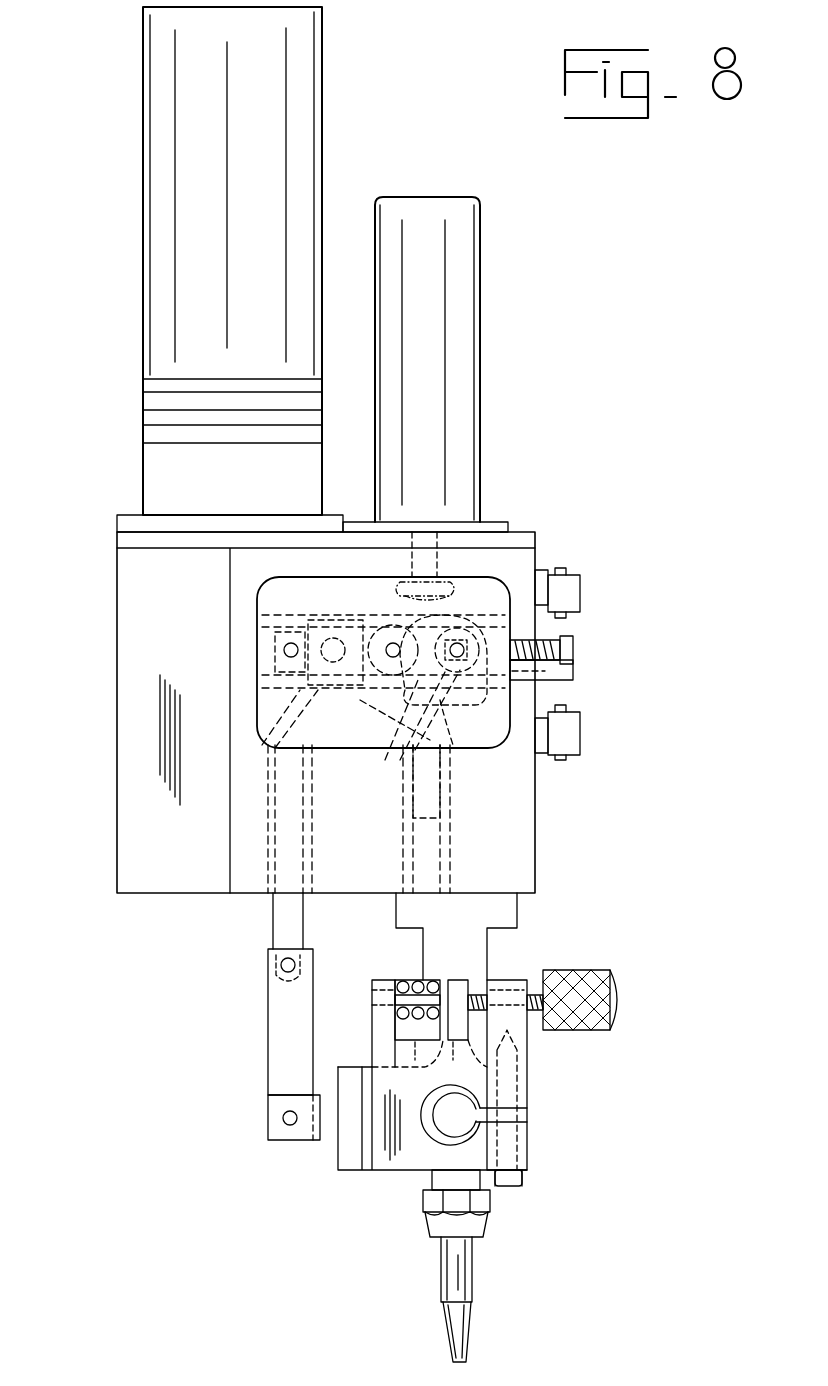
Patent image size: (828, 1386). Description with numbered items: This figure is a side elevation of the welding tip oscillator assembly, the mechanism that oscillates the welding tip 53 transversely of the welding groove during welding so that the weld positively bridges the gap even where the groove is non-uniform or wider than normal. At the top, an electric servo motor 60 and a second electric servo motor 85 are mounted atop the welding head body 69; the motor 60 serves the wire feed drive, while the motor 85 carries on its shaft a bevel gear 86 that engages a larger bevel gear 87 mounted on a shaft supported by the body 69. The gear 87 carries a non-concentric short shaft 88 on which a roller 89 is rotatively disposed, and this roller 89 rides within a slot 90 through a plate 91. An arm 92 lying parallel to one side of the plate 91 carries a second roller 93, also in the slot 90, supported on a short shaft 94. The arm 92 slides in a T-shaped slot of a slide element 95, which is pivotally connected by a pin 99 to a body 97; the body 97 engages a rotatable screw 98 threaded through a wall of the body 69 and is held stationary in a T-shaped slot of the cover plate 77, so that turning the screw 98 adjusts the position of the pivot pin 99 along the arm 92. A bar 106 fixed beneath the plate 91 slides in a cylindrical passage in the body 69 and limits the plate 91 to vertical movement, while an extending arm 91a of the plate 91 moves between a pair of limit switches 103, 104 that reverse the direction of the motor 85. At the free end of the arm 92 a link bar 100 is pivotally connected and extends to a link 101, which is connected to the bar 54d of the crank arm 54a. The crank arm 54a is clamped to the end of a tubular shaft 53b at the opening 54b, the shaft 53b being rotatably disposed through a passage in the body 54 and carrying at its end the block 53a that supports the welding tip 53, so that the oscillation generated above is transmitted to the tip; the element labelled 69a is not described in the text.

The welding tip 53 is at (472, 1268).
The block 53a is at (540, 1099).
The tubular shaft 53b is at (482, 1115).
The body 54 is at (487, 956).
The crank arm 54a is at (365, 1175).
The opening 54b is at (486, 1126).
The bar 54d is at (290, 1140).
The electric servo motor 60 is at (143, 232).
The welding head body 69 is at (535, 812).
The housing boss 69a is at (573, 666).
The cover plate 77 is at (257, 605).
The electric servo motor 85 is at (480, 360).
The bevel gear 86 is at (455, 600).
The larger bevel gear 87 is at (462, 567).
The short shaft 88 is at (392, 642).
The roller 89 is at (358, 682).
The slot 90 is at (385, 760).
The plate 91 is at (455, 750).
The extending arm 91a is at (573, 682).
The arm 92 is at (285, 660).
The second roller 93 is at (438, 692).
The short shaft 94 is at (405, 755).
The slide element 95 is at (325, 692).
The body 97 is at (262, 745).
The rotatable screw 98 is at (573, 650).
The pin 99 is at (334, 638).
The link bar 100 is at (273, 923).
The link 101 is at (268, 1025).
The limit switch 103 is at (580, 592).
The limit switch 104 is at (580, 737).
The bar 106 is at (437, 806).